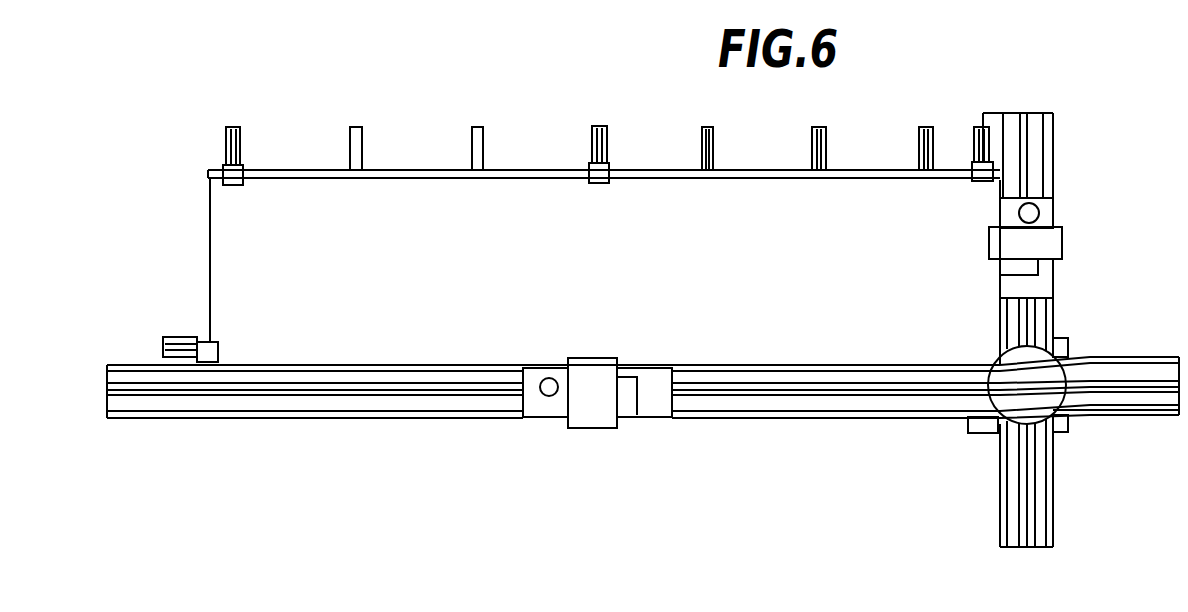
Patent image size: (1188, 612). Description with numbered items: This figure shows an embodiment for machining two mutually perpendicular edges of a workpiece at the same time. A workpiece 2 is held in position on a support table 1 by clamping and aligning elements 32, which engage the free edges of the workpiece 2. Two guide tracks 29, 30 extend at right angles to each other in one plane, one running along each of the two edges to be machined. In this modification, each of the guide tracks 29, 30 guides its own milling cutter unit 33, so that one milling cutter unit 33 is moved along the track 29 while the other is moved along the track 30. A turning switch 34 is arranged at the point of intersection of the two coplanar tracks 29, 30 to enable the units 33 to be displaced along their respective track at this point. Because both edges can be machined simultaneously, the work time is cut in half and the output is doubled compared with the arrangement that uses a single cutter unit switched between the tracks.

The support table 1 is at (523, 178).
The workpiece 2 is at (408, 255).
The guide track 29 is at (380, 403).
The guide track 30 is at (1038, 163).
The clamping and aligning element 32 is at (236, 173).
The milling cutter unit 33 is at (1027, 245).
The turning switch 34 is at (1027, 398).